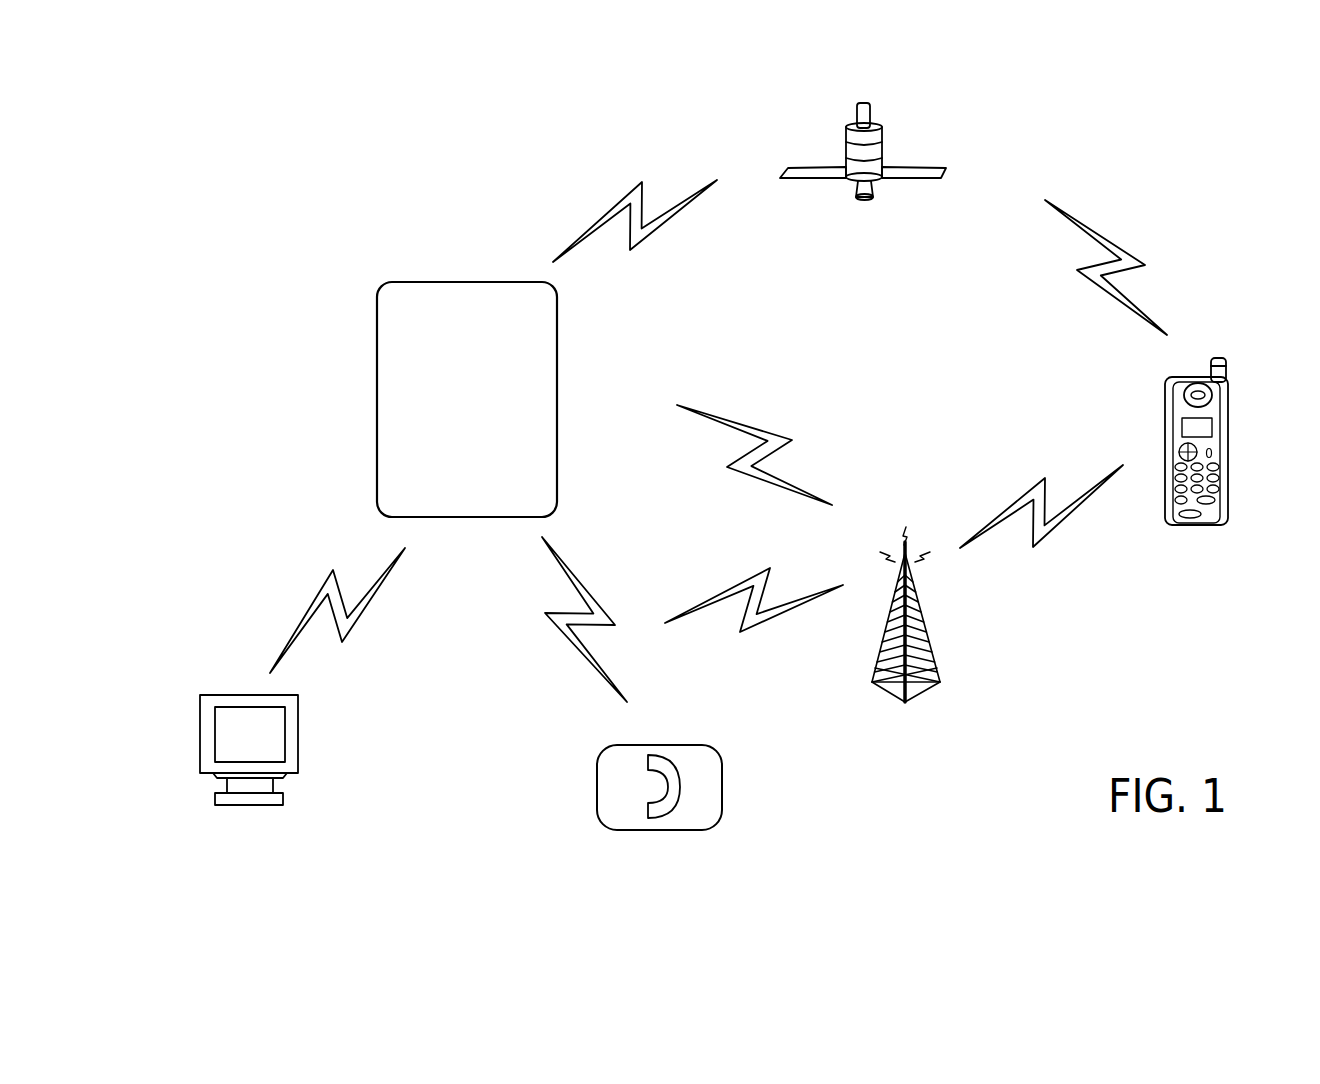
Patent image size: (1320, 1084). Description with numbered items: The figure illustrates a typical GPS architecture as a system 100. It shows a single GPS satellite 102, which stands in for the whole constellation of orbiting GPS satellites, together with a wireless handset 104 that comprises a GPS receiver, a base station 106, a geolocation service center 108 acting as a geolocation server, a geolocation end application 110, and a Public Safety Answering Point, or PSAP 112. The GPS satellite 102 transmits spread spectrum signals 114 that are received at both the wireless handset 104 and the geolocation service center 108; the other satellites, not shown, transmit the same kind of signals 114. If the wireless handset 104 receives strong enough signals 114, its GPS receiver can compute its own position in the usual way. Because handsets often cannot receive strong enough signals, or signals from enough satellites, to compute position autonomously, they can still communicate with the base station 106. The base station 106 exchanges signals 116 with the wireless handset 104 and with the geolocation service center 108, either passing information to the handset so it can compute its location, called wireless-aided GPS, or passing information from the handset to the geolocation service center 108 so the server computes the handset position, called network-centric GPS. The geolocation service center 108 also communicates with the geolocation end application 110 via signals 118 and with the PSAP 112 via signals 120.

The system 100 is at (367, 172).
The GPS satellite 102 is at (917, 167).
The wireless handset 104 is at (1228, 442).
The base station 106 is at (933, 655).
The geolocation service center 108 is at (465, 282).
The geolocation end application 110 is at (252, 695).
The Public Safety Answering Point 112 is at (640, 745).
The spread spectrum signals 114 is at (622, 198).
The signals 116 is at (718, 415).
The signals 118 is at (322, 585).
The signals 120 is at (570, 568).